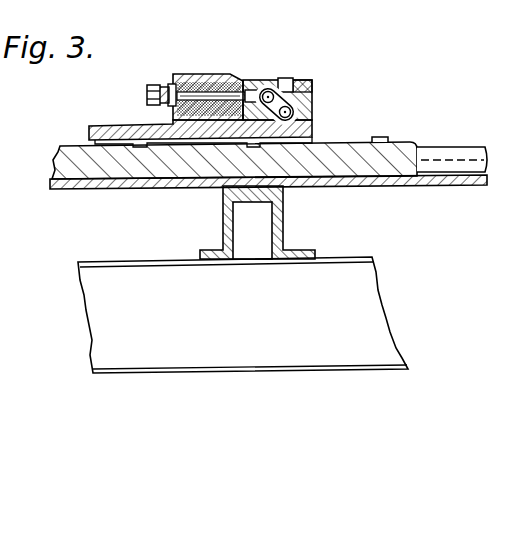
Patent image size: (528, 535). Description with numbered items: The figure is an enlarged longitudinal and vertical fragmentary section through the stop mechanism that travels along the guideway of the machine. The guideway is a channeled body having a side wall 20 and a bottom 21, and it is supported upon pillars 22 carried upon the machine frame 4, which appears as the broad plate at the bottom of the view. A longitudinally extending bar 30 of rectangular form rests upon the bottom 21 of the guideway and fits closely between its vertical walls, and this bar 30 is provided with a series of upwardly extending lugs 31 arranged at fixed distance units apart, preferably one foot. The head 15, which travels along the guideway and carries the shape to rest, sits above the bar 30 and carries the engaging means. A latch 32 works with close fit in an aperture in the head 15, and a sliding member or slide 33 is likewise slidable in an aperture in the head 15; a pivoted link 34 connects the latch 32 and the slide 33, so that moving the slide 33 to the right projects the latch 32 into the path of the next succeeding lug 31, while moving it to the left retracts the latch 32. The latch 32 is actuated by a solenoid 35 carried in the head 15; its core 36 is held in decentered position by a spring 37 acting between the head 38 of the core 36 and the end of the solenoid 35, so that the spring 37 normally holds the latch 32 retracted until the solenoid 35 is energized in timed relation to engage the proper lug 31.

The frame 4 is at (386, 312).
The head 15 is at (133, 126).
The side wall 20 is at (447, 148).
The bottom 21 is at (392, 185).
The pillar 22 is at (284, 219).
The bar 30 is at (340, 143).
The lug 31 is at (384, 138).
The latch 32 is at (288, 78).
The slide 33 is at (313, 96).
The pivoted link 34 is at (307, 81).
The solenoid 35 is at (200, 73).
The core 36 is at (172, 84).
The spring 37 is at (160, 86).
The head of the core 38 is at (147, 94).